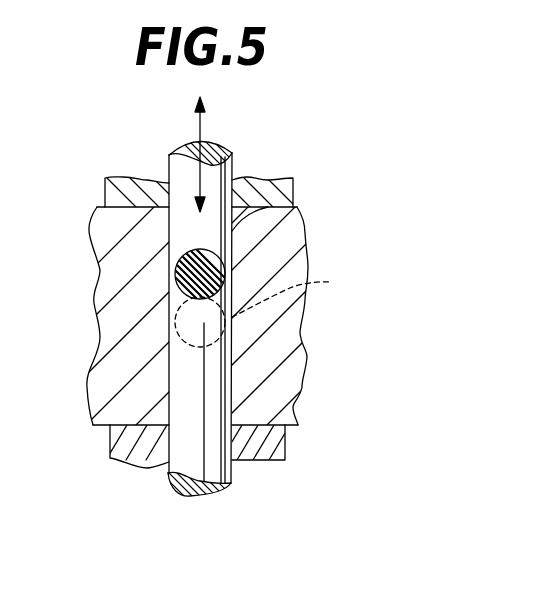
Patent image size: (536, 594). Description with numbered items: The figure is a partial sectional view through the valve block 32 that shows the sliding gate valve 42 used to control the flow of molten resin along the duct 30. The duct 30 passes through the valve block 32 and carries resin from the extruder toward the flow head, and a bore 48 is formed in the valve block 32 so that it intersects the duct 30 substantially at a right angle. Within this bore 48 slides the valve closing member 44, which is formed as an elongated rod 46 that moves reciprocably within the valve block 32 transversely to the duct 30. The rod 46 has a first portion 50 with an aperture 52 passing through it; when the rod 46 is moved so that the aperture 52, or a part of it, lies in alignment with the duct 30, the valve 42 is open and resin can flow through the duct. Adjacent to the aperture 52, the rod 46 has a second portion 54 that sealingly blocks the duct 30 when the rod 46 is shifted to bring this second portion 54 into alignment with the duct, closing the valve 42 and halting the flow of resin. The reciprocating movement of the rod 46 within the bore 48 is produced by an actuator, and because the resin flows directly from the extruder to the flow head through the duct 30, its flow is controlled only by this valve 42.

The duct 30 is at (302, 293).
The valve block 32 is at (103, 370).
The valve 42 is at (292, 333).
The valve closing member 44 is at (110, 437).
The elongated rod 46 is at (217, 148).
The bore 48 is at (293, 198).
The first portion 50 is at (168, 242).
The aperture 52 is at (177, 270).
The second portion 54 is at (210, 332).